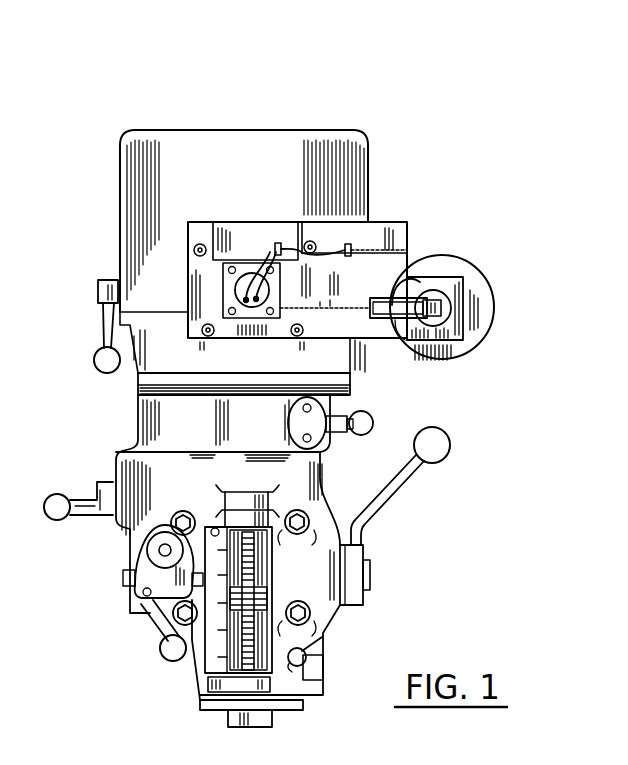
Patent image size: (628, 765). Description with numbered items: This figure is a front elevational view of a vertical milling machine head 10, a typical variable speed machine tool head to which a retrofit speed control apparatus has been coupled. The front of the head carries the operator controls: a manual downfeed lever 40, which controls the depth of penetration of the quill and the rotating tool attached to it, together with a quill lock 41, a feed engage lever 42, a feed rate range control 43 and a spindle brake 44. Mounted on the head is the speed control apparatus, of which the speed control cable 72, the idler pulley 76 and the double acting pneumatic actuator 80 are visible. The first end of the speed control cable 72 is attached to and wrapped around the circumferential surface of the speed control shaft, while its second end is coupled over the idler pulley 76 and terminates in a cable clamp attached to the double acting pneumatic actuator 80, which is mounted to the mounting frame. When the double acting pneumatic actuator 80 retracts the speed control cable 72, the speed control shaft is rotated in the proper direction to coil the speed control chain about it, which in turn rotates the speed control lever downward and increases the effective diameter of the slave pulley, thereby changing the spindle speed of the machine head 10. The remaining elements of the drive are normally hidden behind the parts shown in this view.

The vertical milling machine head 10 is at (372, 141).
The manual downfeed lever 40 is at (376, 516).
The quill lock 41 is at (320, 637).
The feed engage lever 42 is at (157, 627).
The feed rate range control 43 is at (86, 520).
The spindle brake 44 is at (100, 310).
The speed control cable 72 is at (346, 318).
The idler pulley 76 is at (407, 293).
The double acting pneumatic actuator 80 is at (455, 358).